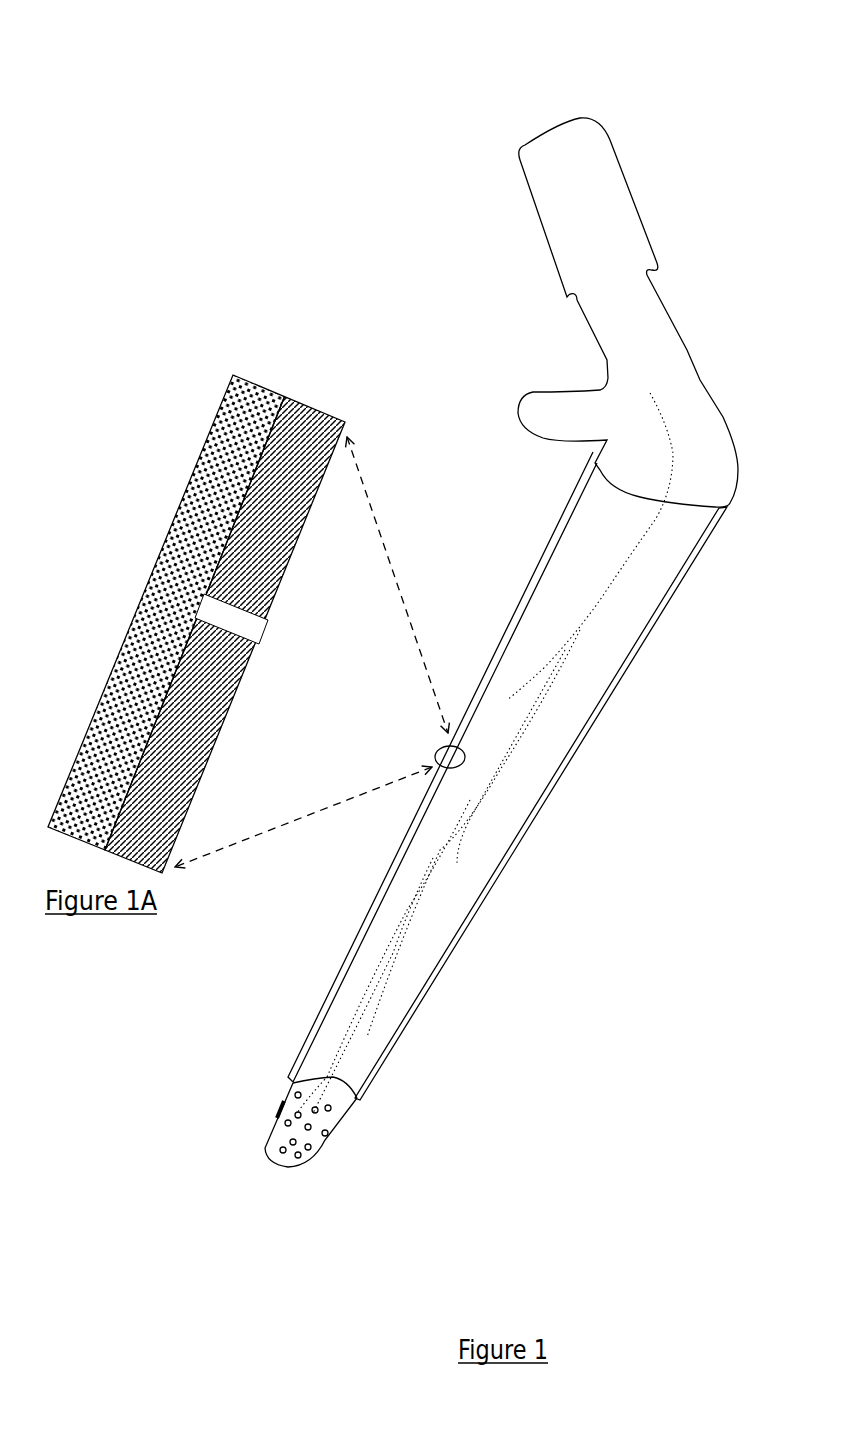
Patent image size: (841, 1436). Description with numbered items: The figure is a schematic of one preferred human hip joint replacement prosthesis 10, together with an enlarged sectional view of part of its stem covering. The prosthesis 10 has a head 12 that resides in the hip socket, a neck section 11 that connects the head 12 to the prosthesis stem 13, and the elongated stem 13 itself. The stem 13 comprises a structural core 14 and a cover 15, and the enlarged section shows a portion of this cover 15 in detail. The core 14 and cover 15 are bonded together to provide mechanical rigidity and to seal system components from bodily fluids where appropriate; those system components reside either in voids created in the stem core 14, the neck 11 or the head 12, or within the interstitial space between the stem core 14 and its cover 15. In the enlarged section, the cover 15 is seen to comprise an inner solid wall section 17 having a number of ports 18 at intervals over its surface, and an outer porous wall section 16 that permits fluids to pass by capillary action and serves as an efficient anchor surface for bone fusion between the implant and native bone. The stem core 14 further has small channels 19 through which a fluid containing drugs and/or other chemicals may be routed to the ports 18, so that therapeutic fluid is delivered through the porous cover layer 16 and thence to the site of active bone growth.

In FIG. 1, the prosthesis 10 is at (632, 65).
In FIG. 1, the neck section 11 is at (658, 360).
In FIG. 1, the head 12 is at (617, 218).
In FIG. 1, the prosthesis stem 13 is at (433, 910).
In FIG. 1, the structural core 14 is at (267, 1132).
In FIG. 1, the cover 15 is at (532, 578).
In FIG. 1A, the cover 15 is at (228, 585).
In FIG. 1A, the outer porous wall section 16 is at (253, 408).
In FIG. 1A, the inner solid wall section 17 is at (322, 417).
In FIG. 1A, the ports 18 is at (243, 622).
In FIG. 1, the small channels 19 is at (577, 643).